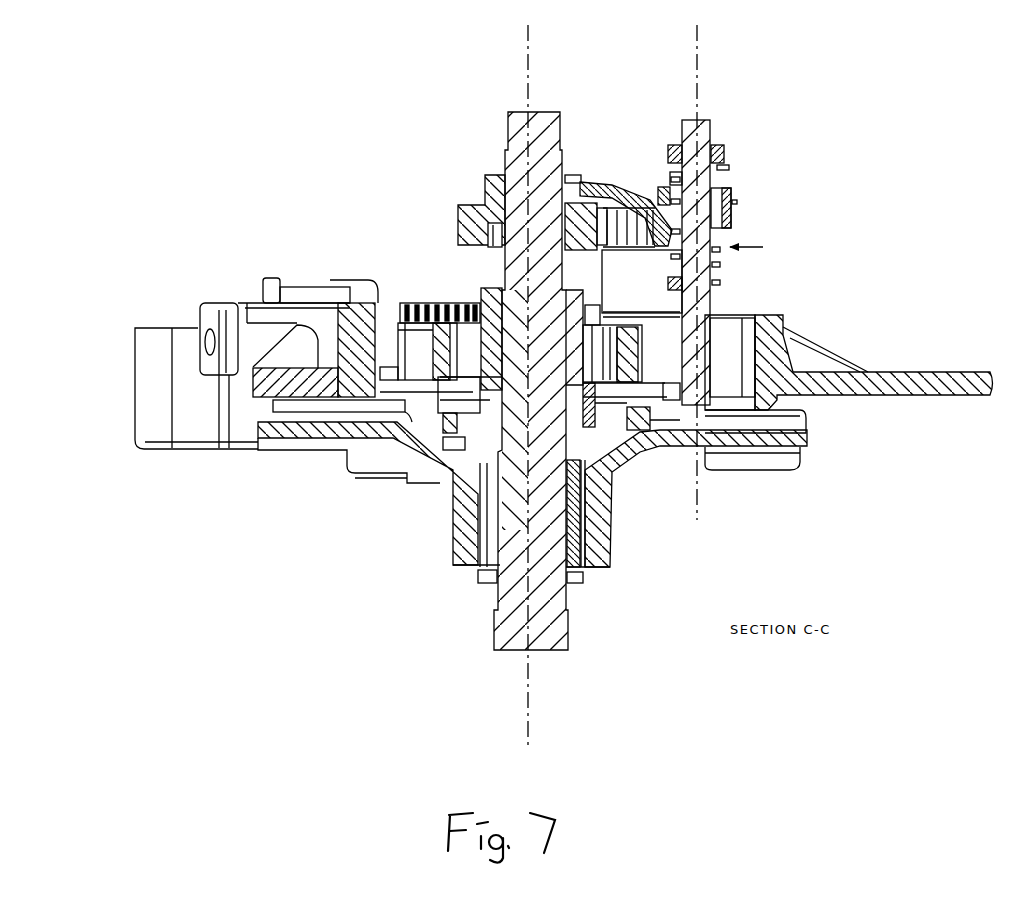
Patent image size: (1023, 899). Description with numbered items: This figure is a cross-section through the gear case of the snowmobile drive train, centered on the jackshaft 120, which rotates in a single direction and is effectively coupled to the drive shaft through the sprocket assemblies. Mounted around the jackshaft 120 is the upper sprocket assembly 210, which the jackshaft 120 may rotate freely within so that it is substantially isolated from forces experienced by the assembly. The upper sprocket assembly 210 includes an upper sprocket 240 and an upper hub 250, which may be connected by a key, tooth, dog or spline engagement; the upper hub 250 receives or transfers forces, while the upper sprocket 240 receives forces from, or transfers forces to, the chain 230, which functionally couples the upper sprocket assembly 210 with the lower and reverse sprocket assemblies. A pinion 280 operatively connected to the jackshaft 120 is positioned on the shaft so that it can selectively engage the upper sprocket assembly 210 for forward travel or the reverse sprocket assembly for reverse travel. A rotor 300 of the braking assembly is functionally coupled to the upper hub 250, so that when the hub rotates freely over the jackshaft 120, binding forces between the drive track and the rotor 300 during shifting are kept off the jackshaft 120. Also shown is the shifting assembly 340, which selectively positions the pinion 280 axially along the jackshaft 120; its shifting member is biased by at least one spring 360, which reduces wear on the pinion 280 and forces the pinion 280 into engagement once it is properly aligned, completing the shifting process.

The jackshaft 120 is at (515, 107).
The upper sprocket assembly 210 is at (232, 172).
The chain 230 is at (423, 345).
The upper sprocket 240 is at (420, 307).
The upper hub 250 is at (487, 290).
The pinion 280 is at (458, 205).
The rotor 300 is at (280, 443).
The shifting assembly 340 is at (603, 183).
The spring 360 is at (720, 267).